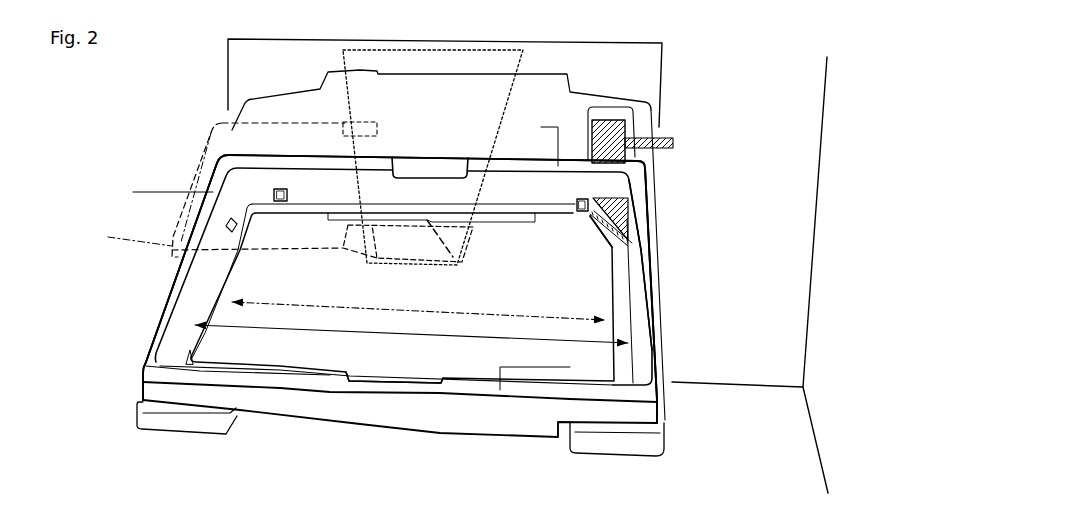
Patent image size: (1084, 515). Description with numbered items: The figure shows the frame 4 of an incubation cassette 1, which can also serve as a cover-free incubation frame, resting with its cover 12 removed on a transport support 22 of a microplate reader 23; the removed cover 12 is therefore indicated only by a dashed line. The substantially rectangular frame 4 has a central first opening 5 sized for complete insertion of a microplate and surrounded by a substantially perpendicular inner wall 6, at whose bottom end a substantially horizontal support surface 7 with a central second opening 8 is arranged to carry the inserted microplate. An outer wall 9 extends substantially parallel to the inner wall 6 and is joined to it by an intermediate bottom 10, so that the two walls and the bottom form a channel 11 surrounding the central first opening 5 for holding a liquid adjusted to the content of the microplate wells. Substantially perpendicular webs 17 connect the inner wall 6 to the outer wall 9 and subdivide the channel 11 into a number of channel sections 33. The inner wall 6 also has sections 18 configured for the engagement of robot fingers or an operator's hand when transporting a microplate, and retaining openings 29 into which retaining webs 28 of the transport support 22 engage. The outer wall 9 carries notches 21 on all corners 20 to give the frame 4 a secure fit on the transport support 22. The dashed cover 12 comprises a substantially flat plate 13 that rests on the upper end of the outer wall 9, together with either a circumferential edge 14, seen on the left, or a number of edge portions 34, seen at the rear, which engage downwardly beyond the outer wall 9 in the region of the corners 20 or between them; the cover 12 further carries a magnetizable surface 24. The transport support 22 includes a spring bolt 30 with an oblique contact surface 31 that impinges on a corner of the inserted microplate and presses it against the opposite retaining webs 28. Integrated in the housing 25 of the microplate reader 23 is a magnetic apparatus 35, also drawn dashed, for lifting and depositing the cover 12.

The incubation cassette 1 is at (150, 139).
The frame 4 is at (299, 415).
The central first opening 5 is at (411, 327).
The inner wall 6 is at (216, 253).
The support surface 7 is at (224, 290).
The central second opening 8 is at (418, 304).
The outer wall 9 is at (190, 230).
The intermediate bottom 10 is at (210, 185).
The channel 11 is at (176, 302).
The cover 12 is at (300, 116).
The plate 13 is at (317, 250).
The circumferential edge 14 is at (128, 235).
The webs 17 is at (165, 257).
The sections 18 is at (424, 172).
The corners 20 is at (220, 153).
The notches 21 is at (191, 412).
The transport support 22 is at (455, 114).
The microplate reader 23 is at (762, 356).
The magnetizable surface 24 is at (357, 235).
The housing 25 is at (226, 76).
The retaining webs 28 is at (250, 227).
The retaining openings 29 is at (291, 194).
The spring bolt 30 is at (592, 127).
The oblique contact surface 31 is at (604, 221).
The channel sections 33 is at (329, 253).
The edge portions 34 is at (377, 134).
The magnetic apparatus 35 is at (527, 60).